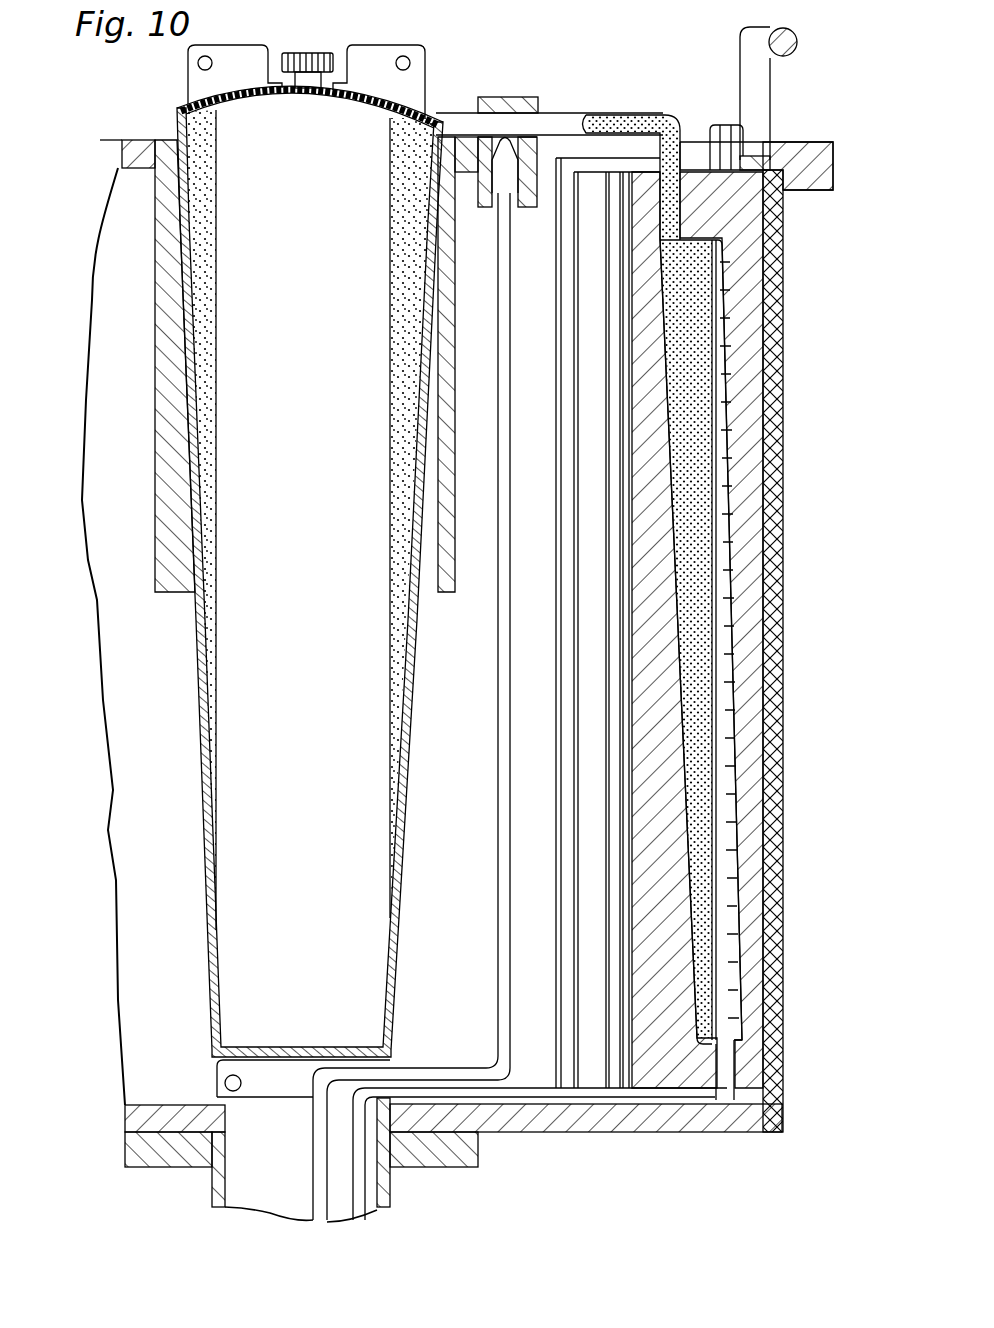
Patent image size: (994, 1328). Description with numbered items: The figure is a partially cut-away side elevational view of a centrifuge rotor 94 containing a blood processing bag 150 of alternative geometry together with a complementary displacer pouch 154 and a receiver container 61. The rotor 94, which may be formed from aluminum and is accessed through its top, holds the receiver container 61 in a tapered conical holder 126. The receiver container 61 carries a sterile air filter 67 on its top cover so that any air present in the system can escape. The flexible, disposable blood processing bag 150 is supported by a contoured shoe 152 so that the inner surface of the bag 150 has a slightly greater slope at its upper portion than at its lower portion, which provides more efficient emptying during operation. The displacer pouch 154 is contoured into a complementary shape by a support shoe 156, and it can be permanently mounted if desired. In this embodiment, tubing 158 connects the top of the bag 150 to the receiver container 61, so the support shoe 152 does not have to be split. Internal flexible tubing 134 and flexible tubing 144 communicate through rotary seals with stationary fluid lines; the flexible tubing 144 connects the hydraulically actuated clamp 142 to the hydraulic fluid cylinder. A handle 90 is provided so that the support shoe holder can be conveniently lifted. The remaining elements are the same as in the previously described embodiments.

The receiver container 61 is at (306, 364).
The sterile air filter 67 is at (302, 55).
The handle 90 is at (770, 28).
The centrifuge rotor 94 is at (140, 140).
The tapered conical holder 126 is at (155, 298).
The internal flexible tubing 134 is at (528, 1095).
The hydraulically actuated clamp 142 is at (538, 152).
The flexible tubing 144 is at (492, 808).
The blood processing bag 150 is at (640, 404).
The contoured shoe 152 is at (665, 563).
The displacer pouch 154 is at (720, 642).
The support shoe 156 is at (748, 402).
The tubing 158 is at (672, 122).